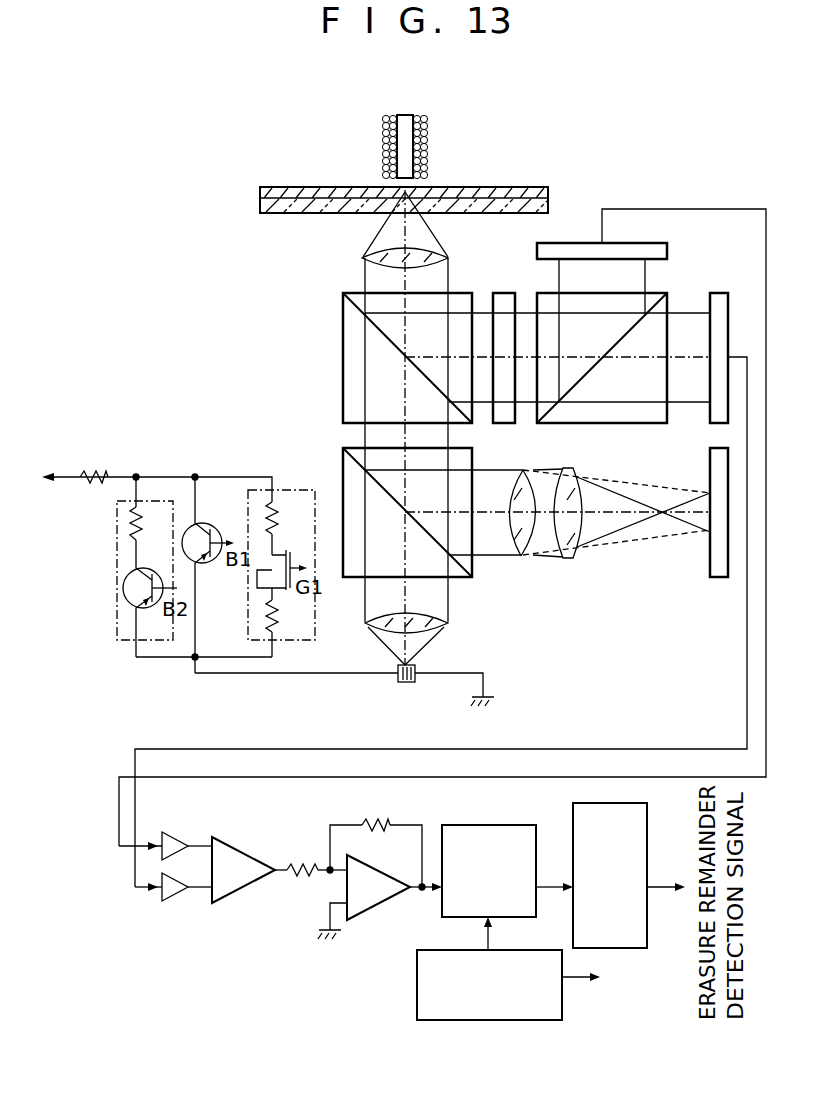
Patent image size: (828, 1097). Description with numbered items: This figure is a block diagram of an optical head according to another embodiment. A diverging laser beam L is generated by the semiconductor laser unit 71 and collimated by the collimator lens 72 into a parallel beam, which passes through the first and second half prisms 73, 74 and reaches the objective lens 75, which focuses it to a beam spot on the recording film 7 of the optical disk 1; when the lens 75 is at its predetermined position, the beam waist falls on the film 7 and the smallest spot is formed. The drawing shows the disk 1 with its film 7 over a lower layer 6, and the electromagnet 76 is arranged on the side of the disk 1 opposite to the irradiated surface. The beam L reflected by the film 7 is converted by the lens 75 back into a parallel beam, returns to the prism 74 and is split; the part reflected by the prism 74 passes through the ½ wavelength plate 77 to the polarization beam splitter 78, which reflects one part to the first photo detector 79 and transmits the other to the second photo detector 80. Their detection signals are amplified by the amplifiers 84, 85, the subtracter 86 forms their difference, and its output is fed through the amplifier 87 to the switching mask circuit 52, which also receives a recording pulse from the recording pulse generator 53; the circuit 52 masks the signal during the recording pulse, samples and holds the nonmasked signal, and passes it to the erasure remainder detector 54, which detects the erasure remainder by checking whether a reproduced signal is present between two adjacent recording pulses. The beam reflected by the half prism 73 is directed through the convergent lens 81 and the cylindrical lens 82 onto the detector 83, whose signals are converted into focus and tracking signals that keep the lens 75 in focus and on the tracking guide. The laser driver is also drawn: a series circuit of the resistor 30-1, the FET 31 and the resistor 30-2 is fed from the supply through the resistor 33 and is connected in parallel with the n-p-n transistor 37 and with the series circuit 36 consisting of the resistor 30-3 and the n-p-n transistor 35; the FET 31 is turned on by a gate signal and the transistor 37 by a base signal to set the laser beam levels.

The optical disk 1 is at (260, 200).
The substrate 6 is at (283, 212).
The recording film 7 is at (285, 189).
The electromagnet 76 is at (406, 115).
The objective lens 75 is at (388, 254).
The second half prism 74 is at (343, 396).
The ½ wavelength plate 77 is at (504, 293).
The polarization beam splitter 78 is at (659, 423).
The first photo detector 79 is at (667, 251).
The second photo detector 80 is at (718, 293).
The first half prism 73 is at (353, 579).
The collimator lens 72 is at (380, 633).
The semiconductor laser unit 71 is at (408, 682).
The laser beam L is at (432, 642).
The convergent lens 81 is at (521, 546).
The cylindrical lens 82 is at (568, 548).
The detector 83 is at (710, 572).
The resistor 33 is at (102, 476).
The resistor 30-1 is at (272, 503).
The resistor 30-2 is at (273, 632).
The resistor 30-3 is at (133, 523).
The FET 31 is at (289, 553).
The n-p-n transistor 35 is at (128, 574).
The series circuit 36 is at (117, 625).
The n-p-n transistor 37 is at (199, 564).
The amplifier 84 is at (178, 839).
The amplifier 85 is at (179, 895).
The subtracter 86 is at (262, 860).
The amplifier 87 is at (389, 875).
The switching mask circuit 52 is at (478, 824).
The recording pulse generator 53 is at (417, 976).
The erasure remainder detector 54 is at (640, 820).